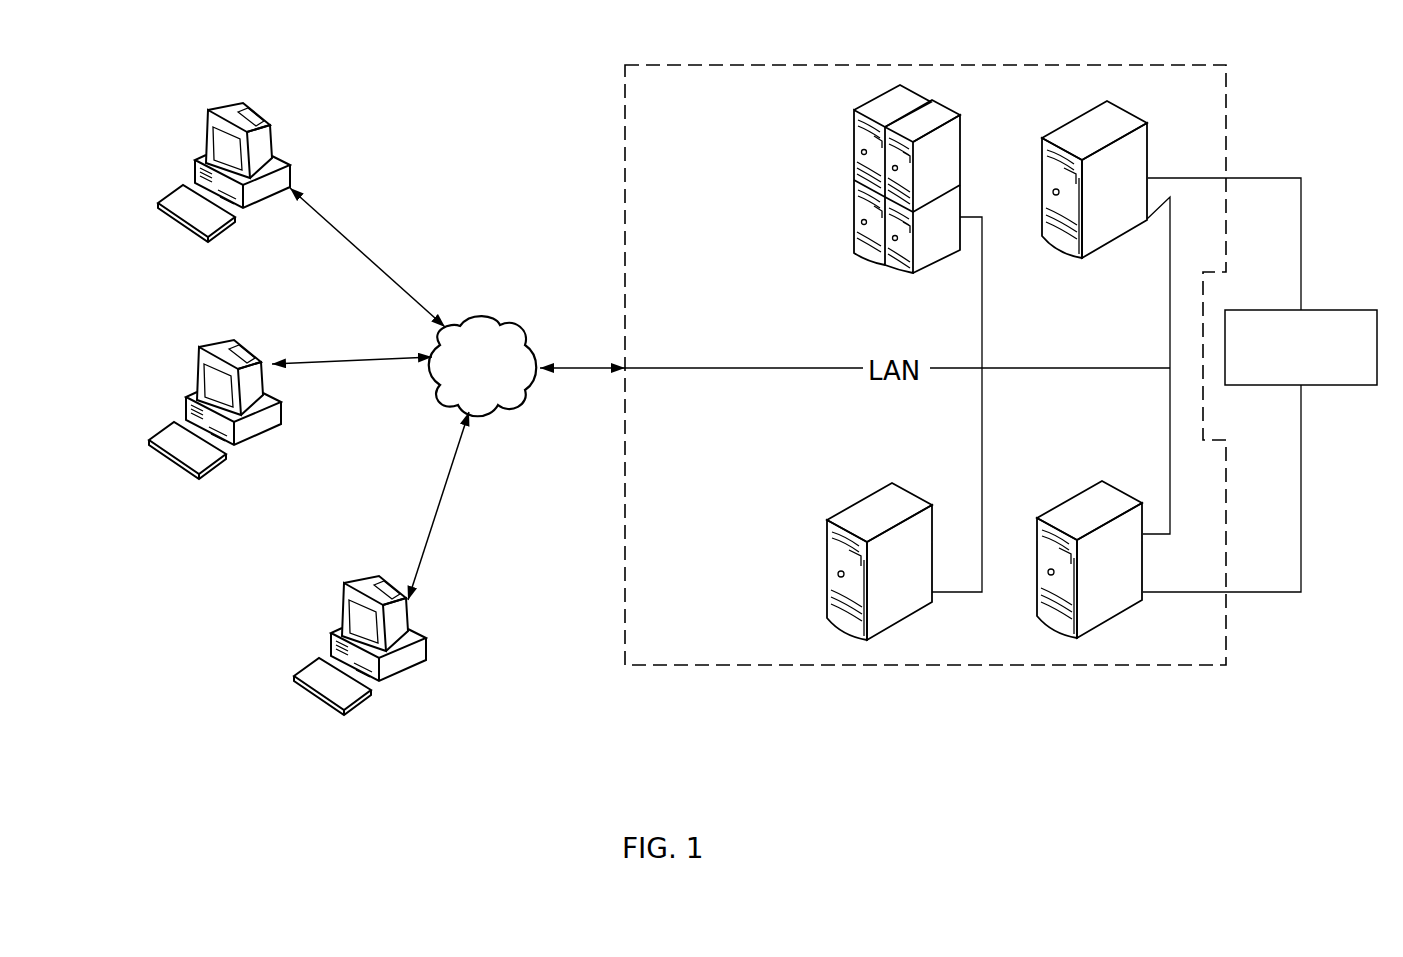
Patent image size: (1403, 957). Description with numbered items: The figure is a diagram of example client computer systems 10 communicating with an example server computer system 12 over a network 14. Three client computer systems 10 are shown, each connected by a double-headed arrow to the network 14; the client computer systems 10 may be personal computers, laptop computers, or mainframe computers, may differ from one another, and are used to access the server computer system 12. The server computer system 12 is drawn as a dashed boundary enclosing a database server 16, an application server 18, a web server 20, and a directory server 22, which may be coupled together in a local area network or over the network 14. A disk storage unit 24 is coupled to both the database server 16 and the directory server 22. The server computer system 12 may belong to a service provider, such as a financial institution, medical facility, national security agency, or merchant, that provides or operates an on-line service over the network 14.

The client computer system 10 is at (210, 112).
The server computer system 12 is at (625, 141).
The network 14 is at (483, 366).
The database server 16 is at (1042, 215).
The application server 18 is at (853, 223).
The web server 20 is at (831, 561).
The directory server 22 is at (1138, 503).
The disk storage unit 24 is at (1237, 385).